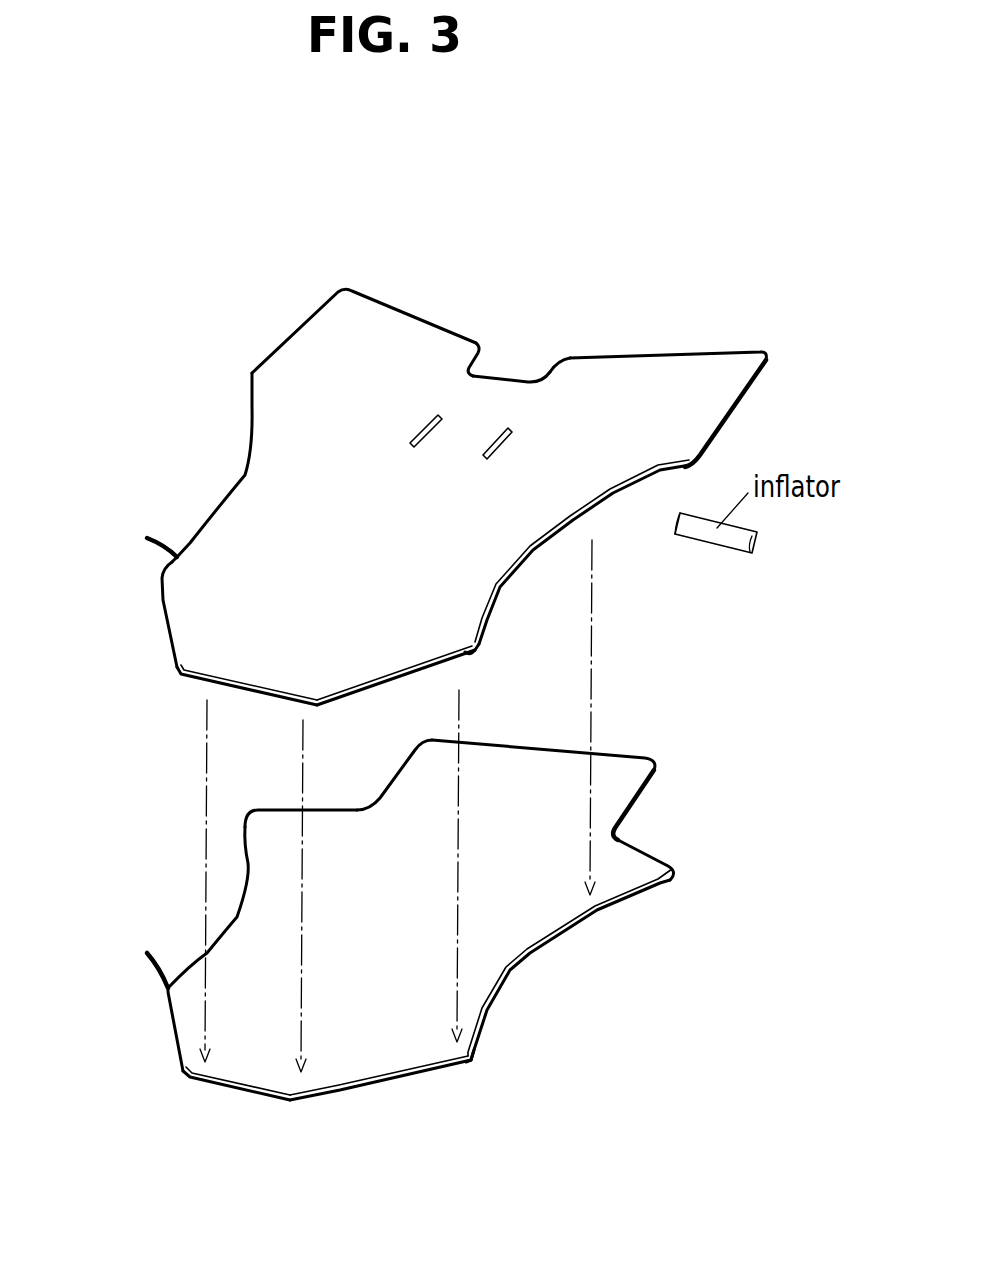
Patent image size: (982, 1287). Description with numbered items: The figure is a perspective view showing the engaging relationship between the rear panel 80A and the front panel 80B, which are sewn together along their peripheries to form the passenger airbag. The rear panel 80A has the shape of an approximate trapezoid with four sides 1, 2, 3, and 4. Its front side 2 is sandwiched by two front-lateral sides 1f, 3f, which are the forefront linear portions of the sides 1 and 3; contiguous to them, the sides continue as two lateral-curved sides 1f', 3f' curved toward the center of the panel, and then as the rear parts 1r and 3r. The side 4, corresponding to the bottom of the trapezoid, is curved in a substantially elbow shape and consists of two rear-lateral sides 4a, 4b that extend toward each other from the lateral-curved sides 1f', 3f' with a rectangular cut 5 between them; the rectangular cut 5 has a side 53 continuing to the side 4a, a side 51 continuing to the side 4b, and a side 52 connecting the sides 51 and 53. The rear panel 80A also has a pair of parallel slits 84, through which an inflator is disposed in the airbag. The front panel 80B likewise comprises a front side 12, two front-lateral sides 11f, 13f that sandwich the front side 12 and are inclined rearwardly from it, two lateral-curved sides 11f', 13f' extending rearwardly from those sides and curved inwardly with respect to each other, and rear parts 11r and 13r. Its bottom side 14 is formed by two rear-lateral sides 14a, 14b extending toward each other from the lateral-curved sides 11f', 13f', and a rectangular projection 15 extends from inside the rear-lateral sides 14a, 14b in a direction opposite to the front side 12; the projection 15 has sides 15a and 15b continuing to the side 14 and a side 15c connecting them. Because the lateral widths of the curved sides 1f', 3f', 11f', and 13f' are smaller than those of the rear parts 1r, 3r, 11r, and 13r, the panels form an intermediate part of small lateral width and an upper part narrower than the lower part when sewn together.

The rear panel 80A is at (238, 342).
The front panel 80B is at (153, 1002).
The side 1 is at (160, 600).
The rear part of side 1 1r is at (300, 320).
The front-lateral side 1f is at (142, 614).
The lateral-curved side 1f' is at (203, 465).
The front side 2 is at (253, 695).
The side 3 is at (418, 683).
The front-lateral side 3f is at (396, 696).
The lateral-curved side 3f' is at (582, 552).
The rear part of side 3 3r is at (730, 420).
The side 4 is at (670, 343).
The rear-lateral side 4a is at (423, 323).
The rear-lateral side 4b is at (627, 357).
The rectangular cut 5 is at (508, 365).
The side of rectangular cut 51 is at (553, 375).
The side of rectangular cut 52 is at (492, 383).
The side of rectangular cut 53 is at (470, 360).
The parallel slits 84 is at (408, 435).
The front-lateral side 11f is at (137, 1037).
The lateral-curved side 11f' is at (195, 907).
The rear part of side 11 11r is at (133, 961).
The front side 12 is at (227, 1093).
The front-lateral side 13f is at (380, 1105).
The lateral-curved side 13f' is at (570, 964).
The rear part of side 13 13r is at (473, 1063).
The side 14 is at (628, 742).
The rear-lateral side 14a is at (273, 808).
The rear-lateral side 14b is at (657, 855).
The rectangular projection 15 is at (647, 755).
The side of projection 15a is at (380, 782).
The side of projection 15b is at (638, 803).
The connecting side of projection 15c is at (530, 753).